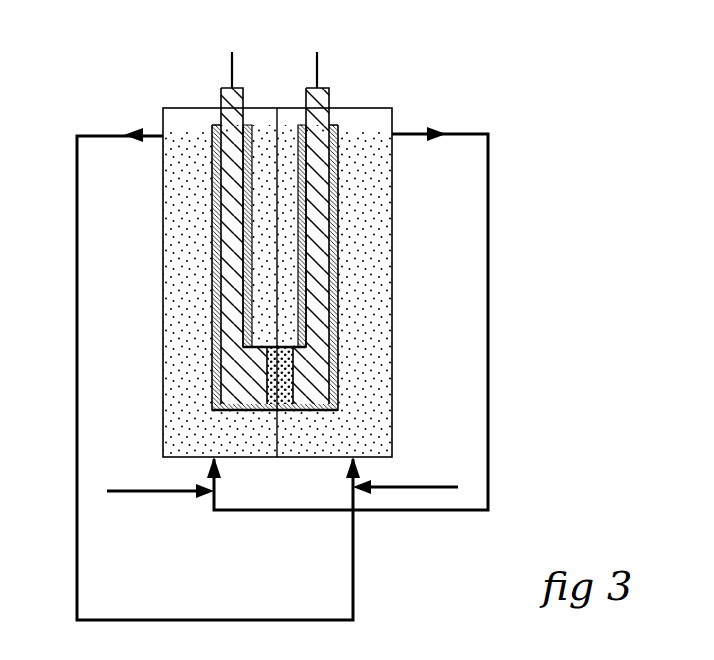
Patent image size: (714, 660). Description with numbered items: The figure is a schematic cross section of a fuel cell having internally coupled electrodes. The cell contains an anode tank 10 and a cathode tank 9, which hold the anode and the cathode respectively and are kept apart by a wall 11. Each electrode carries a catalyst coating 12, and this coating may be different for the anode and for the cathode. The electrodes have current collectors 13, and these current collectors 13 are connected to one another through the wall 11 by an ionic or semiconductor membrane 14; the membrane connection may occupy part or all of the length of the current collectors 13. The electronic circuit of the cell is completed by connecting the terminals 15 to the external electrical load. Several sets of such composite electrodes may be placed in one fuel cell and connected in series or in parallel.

The cathode tank 9 is at (380, 237).
The anode tank 10 is at (183, 288).
The wall 11 is at (278, 128).
The catalyst coating 12 is at (348, 278).
The current collectors 13 is at (318, 335).
The ionic or semiconductor membrane 14 is at (290, 390).
The terminals 15 is at (229, 73).